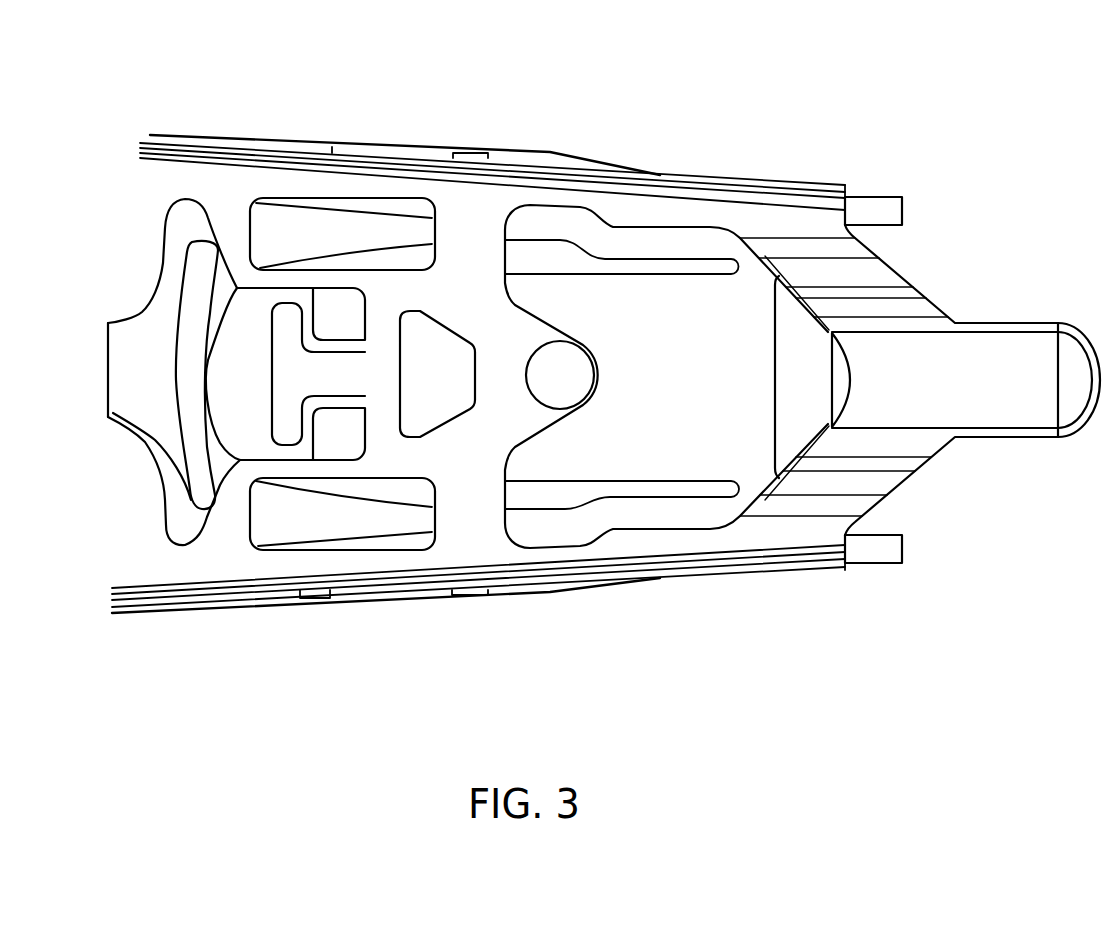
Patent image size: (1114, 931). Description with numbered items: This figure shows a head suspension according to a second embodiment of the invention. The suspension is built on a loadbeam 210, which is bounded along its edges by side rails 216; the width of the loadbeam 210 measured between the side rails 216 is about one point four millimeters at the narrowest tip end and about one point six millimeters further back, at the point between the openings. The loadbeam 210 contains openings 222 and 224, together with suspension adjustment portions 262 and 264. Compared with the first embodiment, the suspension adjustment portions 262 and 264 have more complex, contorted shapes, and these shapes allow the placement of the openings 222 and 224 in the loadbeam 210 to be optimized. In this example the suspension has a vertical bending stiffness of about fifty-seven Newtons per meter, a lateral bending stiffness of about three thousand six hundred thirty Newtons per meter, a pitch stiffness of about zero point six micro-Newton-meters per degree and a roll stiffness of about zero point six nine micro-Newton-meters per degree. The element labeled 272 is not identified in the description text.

The loadbeam 210 is at (147, 208).
The side rails 216 is at (302, 153).
The opening 222 is at (363, 540).
The opening 224 is at (413, 213).
The suspension adjustment portion 262 is at (583, 515).
The suspension adjustment portion 264 is at (627, 250).
The insert body 272 is at (687, 380).